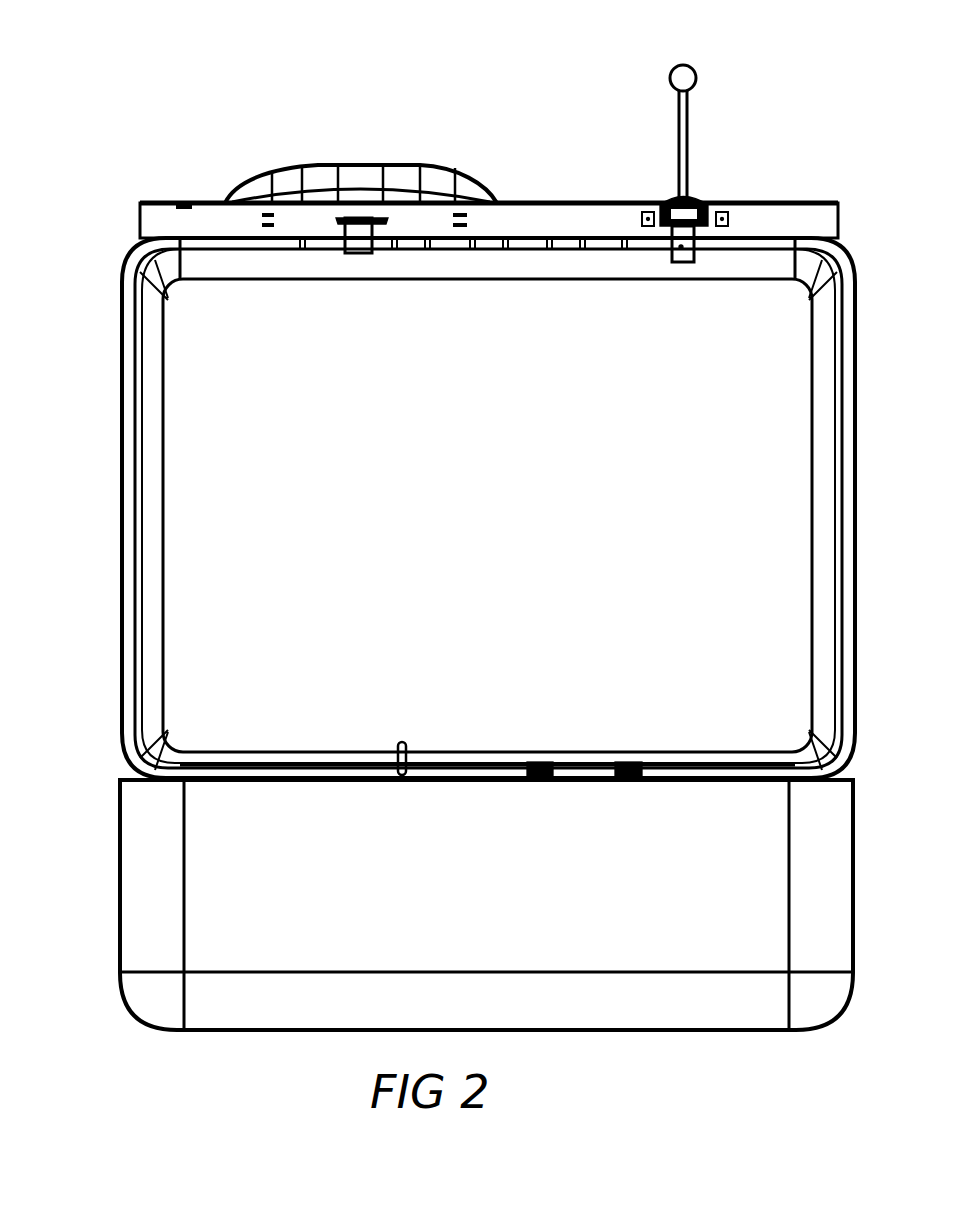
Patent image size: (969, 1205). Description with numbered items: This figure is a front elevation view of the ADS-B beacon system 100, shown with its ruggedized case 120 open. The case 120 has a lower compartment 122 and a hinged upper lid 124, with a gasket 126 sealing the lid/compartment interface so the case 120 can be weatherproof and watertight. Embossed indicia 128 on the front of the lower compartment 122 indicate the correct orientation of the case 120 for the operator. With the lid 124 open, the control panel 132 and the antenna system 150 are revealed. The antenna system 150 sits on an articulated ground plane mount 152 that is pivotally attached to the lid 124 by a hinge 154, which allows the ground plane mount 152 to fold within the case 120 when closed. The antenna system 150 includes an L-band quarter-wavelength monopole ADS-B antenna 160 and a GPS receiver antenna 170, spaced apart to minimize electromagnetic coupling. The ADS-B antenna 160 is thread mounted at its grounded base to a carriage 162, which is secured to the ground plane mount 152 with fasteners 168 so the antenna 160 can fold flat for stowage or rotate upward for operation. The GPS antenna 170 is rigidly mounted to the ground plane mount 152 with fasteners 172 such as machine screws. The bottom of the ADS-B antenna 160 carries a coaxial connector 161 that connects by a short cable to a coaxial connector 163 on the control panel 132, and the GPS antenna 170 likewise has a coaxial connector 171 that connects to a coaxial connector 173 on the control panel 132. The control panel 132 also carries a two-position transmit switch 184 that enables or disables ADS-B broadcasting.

The ADS-B beacon system 100 is at (126, 66).
The ruggedized case 120 is at (184, 1046).
The lower compartment 122 is at (118, 922).
The hinged upper lid 124 is at (120, 605).
The gasket 126 is at (128, 660).
The embossed indicia 128 is at (618, 918).
The control panel 132 is at (250, 785).
The antenna system 150 is at (754, 132).
The articulated ground plane mount 152 is at (553, 203).
The hinge 154 is at (492, 250).
The ADS-B antenna 160 is at (690, 108).
The coaxial connector 161 is at (688, 262).
The carriage 162 is at (666, 232).
The coaxial connector 163 is at (630, 762).
The fasteners 168 is at (650, 228).
The GPS receiver antenna 170 is at (400, 160).
The coaxial connector 171 is at (365, 255).
The fasteners 172 is at (275, 225).
The coaxial connector 173 is at (540, 762).
The two-position transmit switch 184 is at (418, 725).